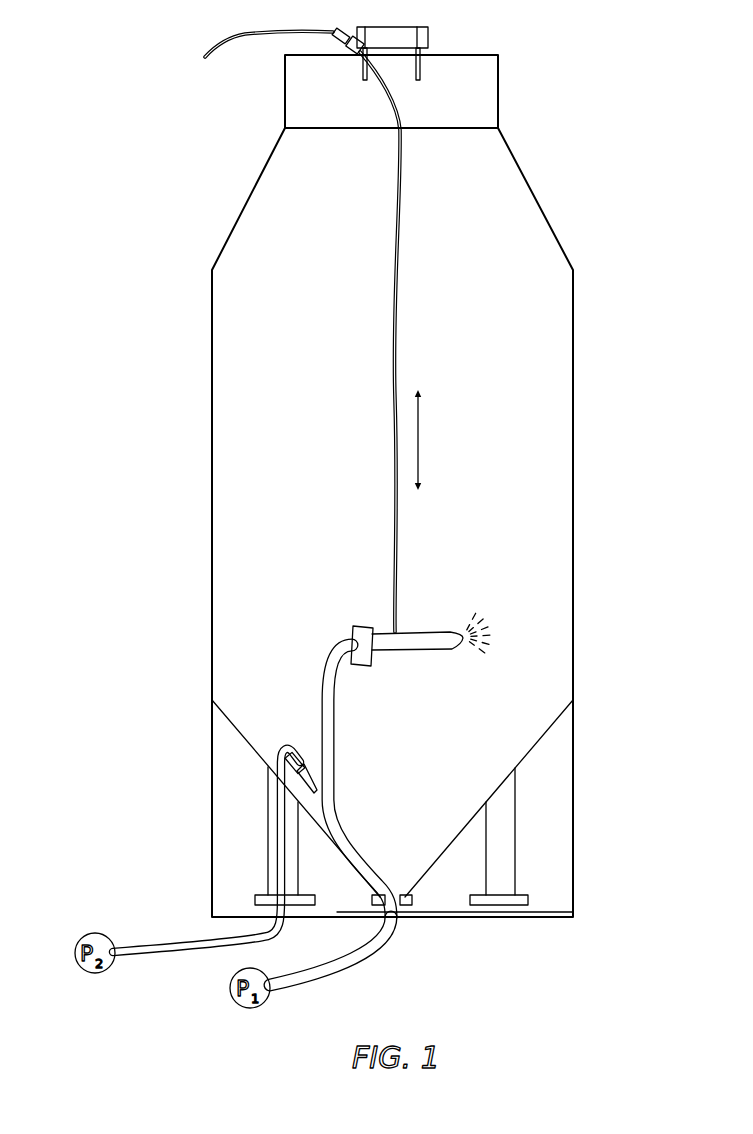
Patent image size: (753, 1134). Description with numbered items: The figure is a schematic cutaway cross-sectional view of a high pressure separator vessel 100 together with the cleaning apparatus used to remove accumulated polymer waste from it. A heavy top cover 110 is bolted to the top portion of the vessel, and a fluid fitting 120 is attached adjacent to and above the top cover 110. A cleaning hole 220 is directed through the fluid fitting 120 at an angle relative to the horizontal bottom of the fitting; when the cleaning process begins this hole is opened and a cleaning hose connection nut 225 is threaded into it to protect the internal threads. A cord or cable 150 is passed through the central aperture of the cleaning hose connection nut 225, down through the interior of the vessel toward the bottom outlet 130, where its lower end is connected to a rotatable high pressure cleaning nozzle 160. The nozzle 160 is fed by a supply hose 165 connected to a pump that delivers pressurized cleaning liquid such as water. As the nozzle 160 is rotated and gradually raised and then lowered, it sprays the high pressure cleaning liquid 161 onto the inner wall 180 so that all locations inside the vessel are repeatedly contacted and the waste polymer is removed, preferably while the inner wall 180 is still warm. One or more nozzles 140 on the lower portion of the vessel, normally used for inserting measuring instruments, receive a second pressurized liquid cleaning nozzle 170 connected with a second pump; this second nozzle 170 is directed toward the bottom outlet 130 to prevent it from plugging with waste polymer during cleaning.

The high pressure separator vessel 100 is at (574, 323).
The top cover 110 is at (499, 92).
The fluid fitting 120 is at (430, 38).
The bottom outlet 130 is at (403, 922).
The nozzle 140 is at (533, 888).
The cord or cable 150 is at (231, 57).
The rotatable high pressure cleaning nozzle 160 is at (404, 650).
The high pressure cleaning liquid 161 is at (473, 611).
The supply hose 165 is at (338, 735).
The second pressurized liquid cleaning nozzle 170 is at (280, 743).
The inner wall 180 is at (218, 423).
The cleaning hole 220 is at (353, 69).
The cleaning hose connection nut 225 is at (335, 29).